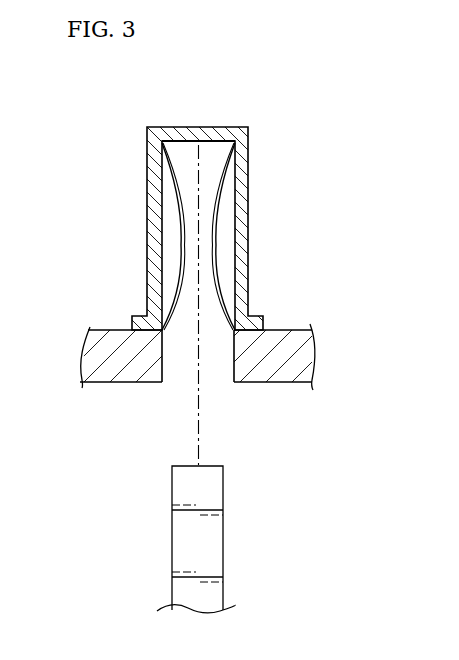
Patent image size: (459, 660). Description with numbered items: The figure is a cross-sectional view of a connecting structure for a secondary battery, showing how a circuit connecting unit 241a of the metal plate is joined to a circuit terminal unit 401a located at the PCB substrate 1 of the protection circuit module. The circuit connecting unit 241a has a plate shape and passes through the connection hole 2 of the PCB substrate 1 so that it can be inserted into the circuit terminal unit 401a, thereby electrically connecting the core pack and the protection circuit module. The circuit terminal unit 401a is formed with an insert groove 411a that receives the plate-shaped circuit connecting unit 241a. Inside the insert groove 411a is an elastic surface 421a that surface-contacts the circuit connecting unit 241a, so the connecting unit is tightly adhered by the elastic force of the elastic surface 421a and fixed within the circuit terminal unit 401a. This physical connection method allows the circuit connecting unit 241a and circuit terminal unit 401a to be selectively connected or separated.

The PCB substrate 1 is at (293, 342).
The connection hole 2 is at (218, 370).
The circuit connecting unit 241a is at (218, 483).
The circuit terminal unit 401a is at (263, 178).
The insert groove 411a is at (210, 157).
The elastic surface 421a is at (178, 206).